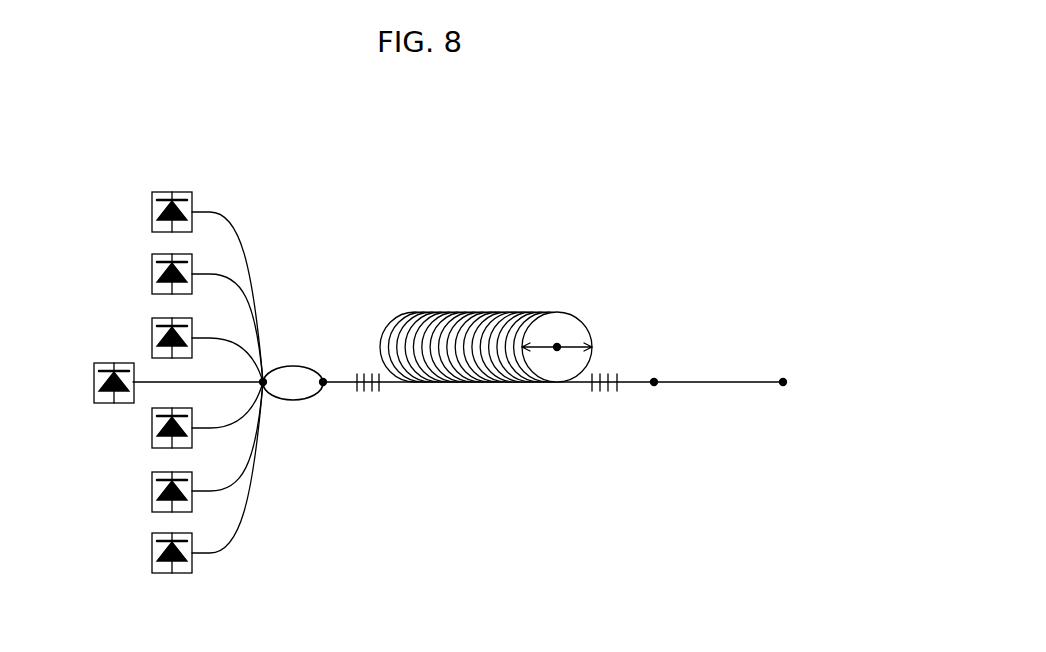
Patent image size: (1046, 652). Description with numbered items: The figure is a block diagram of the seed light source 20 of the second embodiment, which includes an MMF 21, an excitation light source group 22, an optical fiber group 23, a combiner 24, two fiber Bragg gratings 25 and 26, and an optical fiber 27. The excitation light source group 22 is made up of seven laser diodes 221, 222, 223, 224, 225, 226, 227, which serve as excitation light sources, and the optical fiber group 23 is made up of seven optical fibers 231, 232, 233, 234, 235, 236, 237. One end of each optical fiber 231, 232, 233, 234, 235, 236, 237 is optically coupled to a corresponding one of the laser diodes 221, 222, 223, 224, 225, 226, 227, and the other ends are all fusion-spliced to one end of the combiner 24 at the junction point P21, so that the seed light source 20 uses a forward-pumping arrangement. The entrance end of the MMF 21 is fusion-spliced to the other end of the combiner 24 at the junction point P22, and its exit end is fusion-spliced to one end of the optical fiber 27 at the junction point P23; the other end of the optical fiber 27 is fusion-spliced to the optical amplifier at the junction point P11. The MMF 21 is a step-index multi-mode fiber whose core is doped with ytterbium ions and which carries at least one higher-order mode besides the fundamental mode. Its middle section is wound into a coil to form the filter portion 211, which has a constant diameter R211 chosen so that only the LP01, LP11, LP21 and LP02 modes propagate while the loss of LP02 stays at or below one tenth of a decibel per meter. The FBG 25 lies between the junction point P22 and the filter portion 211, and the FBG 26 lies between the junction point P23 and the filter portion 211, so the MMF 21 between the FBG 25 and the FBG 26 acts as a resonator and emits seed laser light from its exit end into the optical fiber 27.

The seed light source 20 is at (676, 140).
The MMF 21 is at (486, 293).
The filter portion 211 is at (487, 311).
The diameter of the filter portion R211 is at (557, 335).
The excitation light source group 22 is at (123, 345).
The LD 221 is at (152, 206).
The LD 222 is at (152, 268).
The LD 223 is at (152, 336).
The LD 224 is at (94, 378).
The LD 225 is at (152, 426).
The LD 226 is at (152, 490).
The LD 227 is at (152, 552).
The optical fiber group 23 is at (198, 351).
The optical fiber 231 is at (214, 210).
The optical fiber 232 is at (214, 272).
The optical fiber 233 is at (214, 336).
The optical fiber 234 is at (214, 380).
The optical fiber 235 is at (214, 430).
The optical fiber 236 is at (214, 493).
The optical fiber 237 is at (214, 555).
The combiner 24 is at (291, 366).
The FBG 25 is at (378, 407).
The FBG 26 is at (598, 412).
The optical fiber 27 is at (720, 380).
The junction point P21 is at (266, 387).
The junction point P22 is at (325, 387).
The junction point P23 is at (654, 388).
The junction point P11 is at (783, 388).